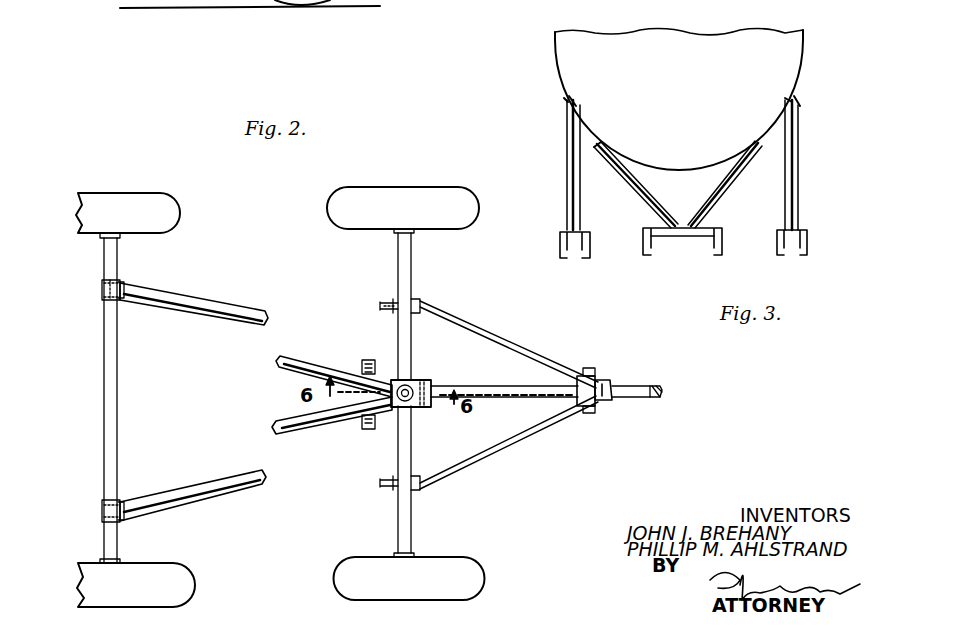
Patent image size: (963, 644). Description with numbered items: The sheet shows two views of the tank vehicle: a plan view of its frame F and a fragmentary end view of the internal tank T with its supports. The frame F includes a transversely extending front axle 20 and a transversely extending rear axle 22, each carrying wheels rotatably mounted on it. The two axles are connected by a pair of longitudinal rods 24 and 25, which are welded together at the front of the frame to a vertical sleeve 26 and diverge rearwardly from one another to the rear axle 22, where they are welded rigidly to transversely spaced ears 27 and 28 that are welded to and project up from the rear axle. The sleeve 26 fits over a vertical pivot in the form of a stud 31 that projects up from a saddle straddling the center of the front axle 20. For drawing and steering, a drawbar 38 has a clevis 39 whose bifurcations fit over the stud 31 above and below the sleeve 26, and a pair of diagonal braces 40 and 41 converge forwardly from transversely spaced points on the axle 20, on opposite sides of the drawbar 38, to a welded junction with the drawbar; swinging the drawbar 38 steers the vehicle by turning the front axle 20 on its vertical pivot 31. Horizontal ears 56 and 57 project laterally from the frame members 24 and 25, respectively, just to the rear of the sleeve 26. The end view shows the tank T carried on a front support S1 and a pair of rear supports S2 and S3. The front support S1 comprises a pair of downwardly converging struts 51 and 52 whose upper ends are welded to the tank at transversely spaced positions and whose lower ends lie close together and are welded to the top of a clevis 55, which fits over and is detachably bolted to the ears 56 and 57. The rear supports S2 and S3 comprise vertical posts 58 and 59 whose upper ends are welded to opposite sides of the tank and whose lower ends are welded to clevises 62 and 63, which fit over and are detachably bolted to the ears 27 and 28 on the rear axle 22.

In FIG. 2, the front axle 20 is at (404, 260).
In FIG. 2, the rear axle 22 is at (118, 392).
In FIG. 2, the rod 24 is at (220, 486).
In FIG. 2, the rod 25 is at (212, 306).
In FIG. 2, the vertical sleeve 26 is at (408, 384).
In FIG. 2, the ear 27 is at (103, 518).
In FIG. 2, the ear 28 is at (103, 298).
In FIG. 2, the stud 31 is at (412, 402).
In FIG. 2, the drawbar 38 is at (526, 392).
In FIG. 2, the clevis 39 is at (433, 386).
In FIG. 2, the diagonal brace 40 is at (500, 428).
In FIG. 2, the diagonal brace 41 is at (507, 350).
In FIG. 2, the horizontal ear 56 is at (368, 430).
In FIG. 2, the horizontal ear 57 is at (363, 361).
In FIG. 2, the frame F is at (171, 400).
In FIG. 3, the tank T is at (780, 62).
In FIG. 3, the strut 51 is at (728, 190).
In FIG. 3, the strut 52 is at (640, 190).
In FIG. 3, the clevis 55 is at (645, 240).
In FIG. 3, the vertical post 58 is at (799, 143).
In FIG. 3, the vertical post 59 is at (568, 160).
In FIG. 3, the clevis 62 is at (809, 238).
In FIG. 3, the clevis 63 is at (558, 240).
In FIG. 3, the front support S1 is at (704, 188).
In FIG. 3, the rear support S2 is at (804, 185).
In FIG. 3, the rear support S3 is at (566, 197).